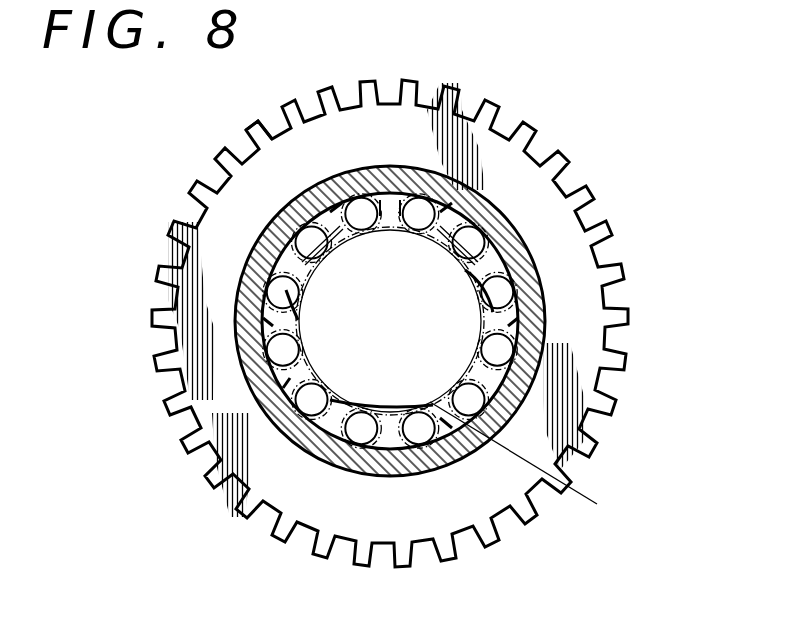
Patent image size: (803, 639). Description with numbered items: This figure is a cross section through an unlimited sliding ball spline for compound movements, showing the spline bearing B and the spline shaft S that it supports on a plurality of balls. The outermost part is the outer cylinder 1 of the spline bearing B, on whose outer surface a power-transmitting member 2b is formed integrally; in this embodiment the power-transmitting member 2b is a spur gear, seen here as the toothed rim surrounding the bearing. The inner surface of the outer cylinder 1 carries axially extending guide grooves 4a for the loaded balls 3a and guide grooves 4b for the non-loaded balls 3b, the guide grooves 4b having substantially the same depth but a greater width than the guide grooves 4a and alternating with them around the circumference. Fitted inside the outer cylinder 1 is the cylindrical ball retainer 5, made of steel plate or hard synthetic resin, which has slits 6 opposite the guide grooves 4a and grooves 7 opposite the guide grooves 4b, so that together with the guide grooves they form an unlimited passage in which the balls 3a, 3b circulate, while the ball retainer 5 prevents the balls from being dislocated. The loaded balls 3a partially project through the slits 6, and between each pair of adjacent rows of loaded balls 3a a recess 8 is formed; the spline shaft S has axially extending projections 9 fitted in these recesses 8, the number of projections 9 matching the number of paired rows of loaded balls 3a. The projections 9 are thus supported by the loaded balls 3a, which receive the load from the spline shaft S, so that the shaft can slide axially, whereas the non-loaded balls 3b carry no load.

The outer cylinder 1 is at (543, 260).
The power-transmitting member 2b is at (240, 140).
The spline bearing B is at (481, 198).
The loaded balls 3a is at (415, 200).
The non-loaded balls 3b is at (272, 278).
The guide grooves 4a is at (290, 378).
The guide grooves 4b is at (512, 250).
The ball retainer 5 is at (470, 268).
The slits 6 is at (352, 190).
The grooves 7 is at (280, 287).
The recesses 8 is at (391, 208).
The projections 9 is at (550, 364).
The spline shaft S is at (523, 465).